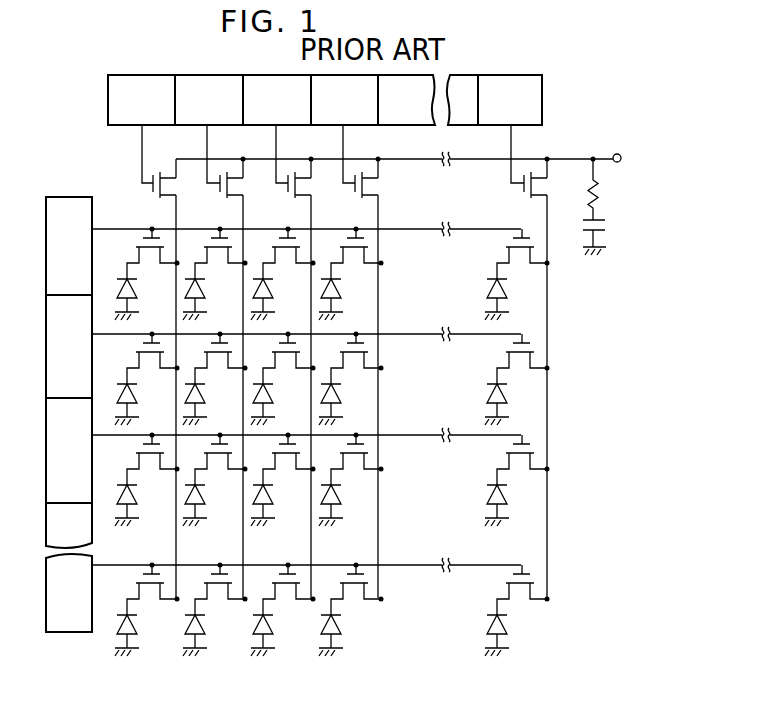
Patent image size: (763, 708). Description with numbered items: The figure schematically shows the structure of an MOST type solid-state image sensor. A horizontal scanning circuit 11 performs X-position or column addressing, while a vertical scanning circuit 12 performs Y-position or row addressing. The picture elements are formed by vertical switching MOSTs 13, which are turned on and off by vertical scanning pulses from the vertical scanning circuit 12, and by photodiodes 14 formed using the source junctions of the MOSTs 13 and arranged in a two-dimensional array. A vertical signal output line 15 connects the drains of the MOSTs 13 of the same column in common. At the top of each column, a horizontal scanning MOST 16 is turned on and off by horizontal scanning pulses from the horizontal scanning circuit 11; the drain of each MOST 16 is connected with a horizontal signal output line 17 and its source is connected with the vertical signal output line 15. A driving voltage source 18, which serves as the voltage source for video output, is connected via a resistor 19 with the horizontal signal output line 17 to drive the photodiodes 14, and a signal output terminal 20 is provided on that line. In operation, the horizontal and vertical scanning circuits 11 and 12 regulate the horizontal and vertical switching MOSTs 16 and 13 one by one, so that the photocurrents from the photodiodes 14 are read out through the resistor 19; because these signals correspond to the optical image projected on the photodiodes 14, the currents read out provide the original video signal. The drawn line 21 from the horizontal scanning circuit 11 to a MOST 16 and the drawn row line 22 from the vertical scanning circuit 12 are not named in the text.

The horizontal scanning circuit 11 is at (542, 100).
The vertical scanning circuit 12 is at (69, 197).
The vertical switching MOST 13 is at (151, 252).
The photodiode 14 is at (138, 290).
The vertical signal output line 15 is at (176, 212).
The horizontal scanning MOST 16 is at (165, 186).
The horizontal signal output line 17 is at (467, 145).
The driving voltage source 18 is at (600, 224).
The resistor 19 is at (598, 199).
The signal output terminal 20 is at (631, 149).
The horizontal scanning line 21 is at (138, 152).
The vertical scanning line 22 is at (116, 229).